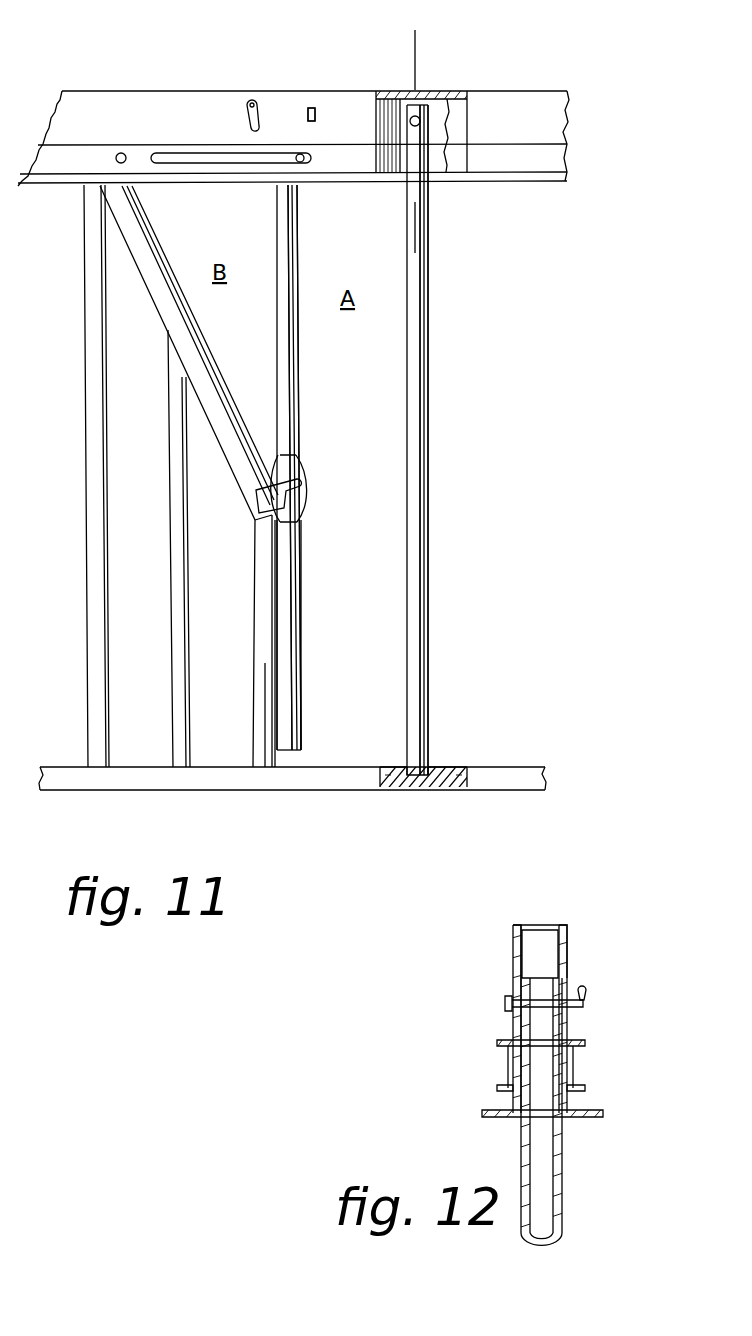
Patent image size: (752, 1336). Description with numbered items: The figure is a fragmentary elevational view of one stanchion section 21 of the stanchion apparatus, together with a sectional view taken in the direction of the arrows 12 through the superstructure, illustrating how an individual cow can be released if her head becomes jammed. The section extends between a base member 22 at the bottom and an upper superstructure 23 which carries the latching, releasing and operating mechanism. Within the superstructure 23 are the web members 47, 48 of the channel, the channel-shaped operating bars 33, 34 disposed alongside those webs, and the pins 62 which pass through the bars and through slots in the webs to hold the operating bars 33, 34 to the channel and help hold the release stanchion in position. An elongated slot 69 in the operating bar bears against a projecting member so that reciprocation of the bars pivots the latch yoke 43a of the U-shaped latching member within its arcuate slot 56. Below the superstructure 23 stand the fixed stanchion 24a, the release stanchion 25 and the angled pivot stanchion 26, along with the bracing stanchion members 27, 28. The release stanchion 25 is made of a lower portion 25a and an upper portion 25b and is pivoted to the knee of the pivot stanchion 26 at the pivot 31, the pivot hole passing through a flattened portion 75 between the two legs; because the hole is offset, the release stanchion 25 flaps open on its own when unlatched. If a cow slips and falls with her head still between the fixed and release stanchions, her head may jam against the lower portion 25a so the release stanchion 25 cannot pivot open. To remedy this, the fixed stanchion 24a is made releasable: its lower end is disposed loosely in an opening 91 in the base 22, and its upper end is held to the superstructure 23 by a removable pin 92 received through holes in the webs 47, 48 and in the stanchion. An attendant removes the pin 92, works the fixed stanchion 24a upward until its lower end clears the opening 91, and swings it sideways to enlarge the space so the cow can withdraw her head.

In FIG. 11, the section line arrows 12 is at (420, 40).
In FIG. 11, the stanchion section 21 is at (434, 325).
In FIG. 11, the base member 22 is at (322, 790).
In FIG. 11, the superstructure 23 is at (301, 85).
In FIG. 12, the superstructure 23 is at (550, 920).
In FIG. 11, the fixed stanchion 24a is at (430, 440).
In FIG. 12, the fixed stanchion 24a is at (565, 1186).
In FIG. 11, the release stanchion member 25 is at (302, 265).
In FIG. 11, the lower portion of release stanchion 25a is at (300, 368).
In FIG. 11, the upper portion of release stanchion 25b is at (300, 596).
In FIG. 11, the pivot stanchion 26 is at (222, 474).
In FIG. 11, the bracing stanchion member 27 is at (170, 616).
In FIG. 11, the bracing stanchion member 28 is at (101, 556).
In FIG. 11, the pivot 31 is at (308, 493).
In FIG. 12, the operating bar 33 is at (497, 1043).
In FIG. 12, the operating bar 34 is at (585, 1042).
In FIG. 11, the latch yoke 43a is at (242, 106).
In FIG. 12, the web member 47 is at (513, 942).
In FIG. 12, the web member 48 is at (567, 950).
In FIG. 11, the arcuate slot 56 is at (258, 104).
In FIG. 11, the pin 62 is at (122, 152).
In FIG. 11, the elongated slot 69 is at (180, 157).
In FIG. 11, the flattened portion 75 is at (302, 462).
In FIG. 11, the opening 91 is at (436, 765).
In FIG. 12, the removable pin 92 is at (505, 1003).